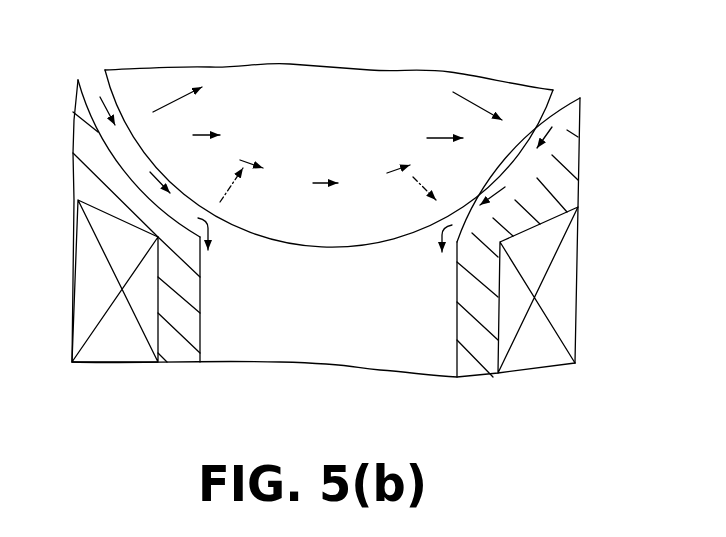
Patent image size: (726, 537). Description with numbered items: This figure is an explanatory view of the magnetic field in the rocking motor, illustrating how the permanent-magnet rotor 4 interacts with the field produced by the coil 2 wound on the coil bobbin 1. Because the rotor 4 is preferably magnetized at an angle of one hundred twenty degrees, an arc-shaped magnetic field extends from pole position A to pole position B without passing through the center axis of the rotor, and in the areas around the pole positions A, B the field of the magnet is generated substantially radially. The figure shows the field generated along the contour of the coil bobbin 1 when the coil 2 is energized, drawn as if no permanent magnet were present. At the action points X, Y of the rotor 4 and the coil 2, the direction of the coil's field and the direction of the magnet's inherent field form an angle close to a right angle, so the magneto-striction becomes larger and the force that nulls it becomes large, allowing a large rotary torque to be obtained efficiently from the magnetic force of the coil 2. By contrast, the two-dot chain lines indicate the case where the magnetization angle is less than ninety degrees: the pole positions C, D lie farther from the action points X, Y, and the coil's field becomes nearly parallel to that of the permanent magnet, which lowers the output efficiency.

The coil bobbin 1 is at (468, 370).
The coil 2 is at (560, 275).
The rotor 4 is at (367, 97).
The pole position A is at (147, 115).
The pole position B is at (508, 125).
The pole position C is at (218, 203).
The pole position D is at (436, 204).
The action point X is at (90, 102).
The action point Y is at (563, 122).